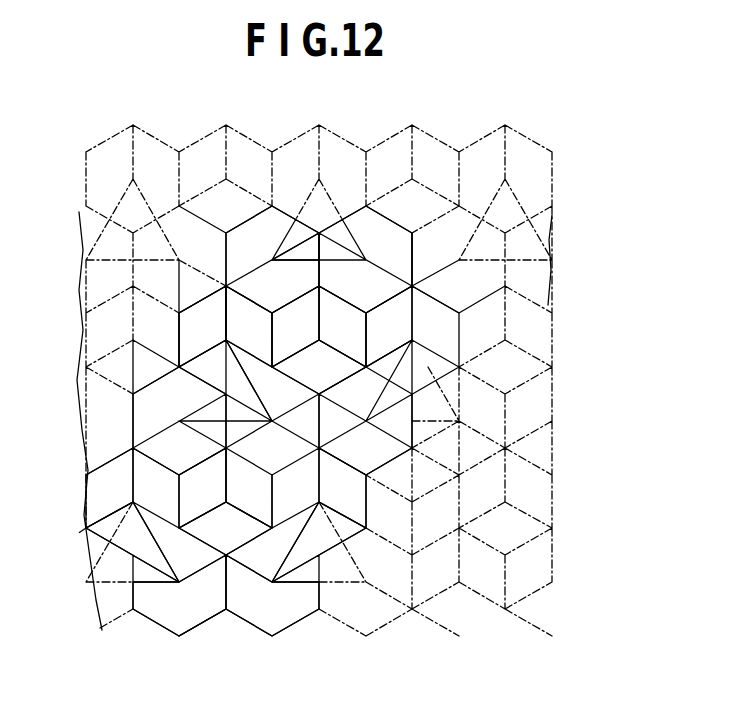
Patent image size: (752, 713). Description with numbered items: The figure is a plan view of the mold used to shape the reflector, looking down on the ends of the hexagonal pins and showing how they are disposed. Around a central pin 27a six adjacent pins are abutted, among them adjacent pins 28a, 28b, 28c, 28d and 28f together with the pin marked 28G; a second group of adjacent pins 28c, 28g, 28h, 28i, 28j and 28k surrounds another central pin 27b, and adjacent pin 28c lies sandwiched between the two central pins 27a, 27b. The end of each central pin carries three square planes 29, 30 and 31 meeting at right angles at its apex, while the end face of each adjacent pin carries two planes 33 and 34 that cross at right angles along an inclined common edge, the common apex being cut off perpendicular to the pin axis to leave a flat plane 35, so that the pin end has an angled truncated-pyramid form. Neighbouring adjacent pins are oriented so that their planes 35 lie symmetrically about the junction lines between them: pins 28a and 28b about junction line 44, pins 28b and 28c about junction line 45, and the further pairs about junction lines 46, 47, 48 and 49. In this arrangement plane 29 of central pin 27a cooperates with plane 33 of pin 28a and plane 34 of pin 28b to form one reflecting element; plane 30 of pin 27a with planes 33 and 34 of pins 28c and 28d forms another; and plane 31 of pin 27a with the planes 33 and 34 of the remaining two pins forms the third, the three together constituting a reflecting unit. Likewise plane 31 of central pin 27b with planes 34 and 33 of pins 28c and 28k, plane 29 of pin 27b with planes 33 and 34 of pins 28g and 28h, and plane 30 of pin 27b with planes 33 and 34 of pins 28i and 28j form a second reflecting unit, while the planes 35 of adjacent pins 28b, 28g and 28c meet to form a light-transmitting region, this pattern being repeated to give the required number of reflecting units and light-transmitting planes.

The central pin 27a is at (422, 302).
The central pin 27b is at (228, 607).
The adjacent pin 28a is at (270, 220).
The adjacent pin 28b is at (182, 311).
The adjacent pin 28c is at (372, 527).
The adjacent pin 28d is at (388, 437).
The adjacent pin 28f is at (393, 222).
The panel 28G is at (368, 322).
The adjacent pin 28g is at (138, 413).
The adjacent pin 28h is at (93, 507).
The adjacent pin 28i is at (165, 620).
The adjacent pin 28j is at (302, 612).
The adjacent pin 28k is at (353, 527).
The square plane 29 is at (214, 502).
The square plane 30 is at (241, 536).
The square plane 31 is at (257, 495).
The plane 33 is at (291, 614).
The plane 34 is at (179, 615).
The flat plane 35 is at (314, 579).
The junction line 44 is at (233, 283).
The junction line 45 is at (259, 372).
The vertex 46 is at (313, 400).
The junction line 47 is at (368, 368).
The edge 48 is at (413, 263).
The junction line 49 is at (320, 279).